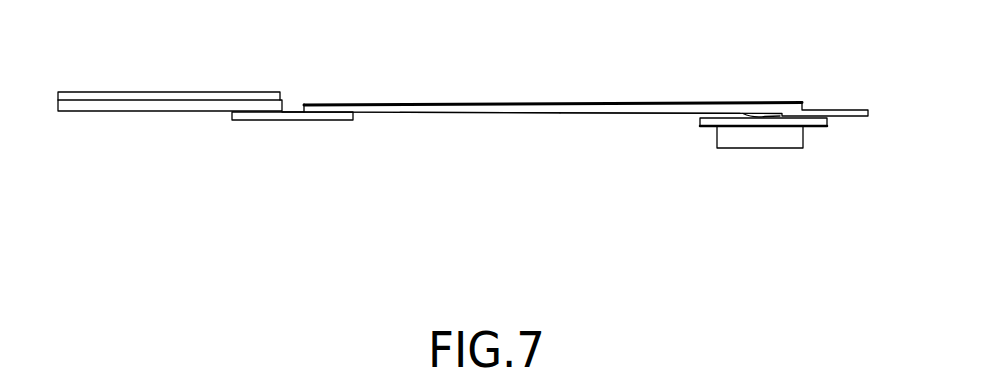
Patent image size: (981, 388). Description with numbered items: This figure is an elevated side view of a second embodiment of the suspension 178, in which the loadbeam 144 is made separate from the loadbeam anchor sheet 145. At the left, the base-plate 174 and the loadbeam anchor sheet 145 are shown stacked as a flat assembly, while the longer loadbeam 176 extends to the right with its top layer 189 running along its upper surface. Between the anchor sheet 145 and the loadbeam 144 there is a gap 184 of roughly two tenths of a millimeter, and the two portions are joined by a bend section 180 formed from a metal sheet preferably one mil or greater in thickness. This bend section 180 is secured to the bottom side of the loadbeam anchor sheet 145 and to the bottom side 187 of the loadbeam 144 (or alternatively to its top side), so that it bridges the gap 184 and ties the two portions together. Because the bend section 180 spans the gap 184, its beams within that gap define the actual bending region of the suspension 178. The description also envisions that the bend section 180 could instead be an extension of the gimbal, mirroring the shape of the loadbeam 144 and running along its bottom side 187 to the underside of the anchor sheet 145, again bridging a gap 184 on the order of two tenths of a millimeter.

The suspension 178 is at (180, 38).
The upper plate 174 is at (150, 92).
The loadbeam anchor sheet 145 is at (203, 112).
The bend section 180 is at (298, 120).
The gap 184 is at (292, 103).
The main plate 176 is at (455, 103).
The top layer 189 is at (373, 103).
The loadbeam 144 is at (493, 112).
The bottom side of the loadbeam 187 is at (647, 112).